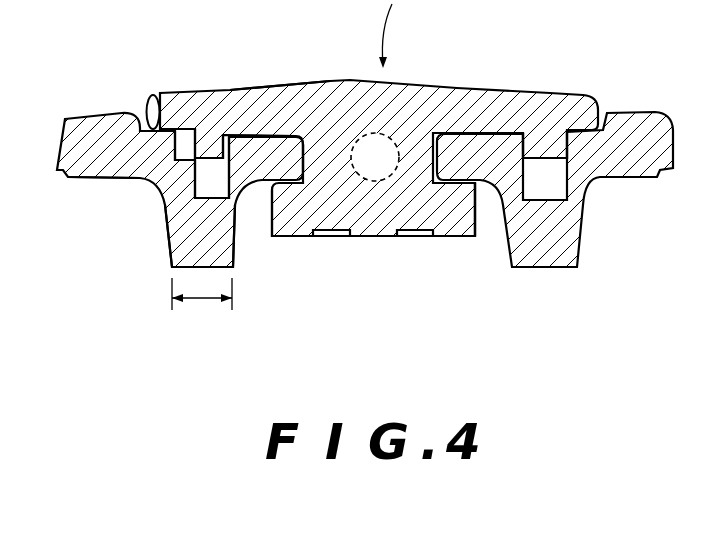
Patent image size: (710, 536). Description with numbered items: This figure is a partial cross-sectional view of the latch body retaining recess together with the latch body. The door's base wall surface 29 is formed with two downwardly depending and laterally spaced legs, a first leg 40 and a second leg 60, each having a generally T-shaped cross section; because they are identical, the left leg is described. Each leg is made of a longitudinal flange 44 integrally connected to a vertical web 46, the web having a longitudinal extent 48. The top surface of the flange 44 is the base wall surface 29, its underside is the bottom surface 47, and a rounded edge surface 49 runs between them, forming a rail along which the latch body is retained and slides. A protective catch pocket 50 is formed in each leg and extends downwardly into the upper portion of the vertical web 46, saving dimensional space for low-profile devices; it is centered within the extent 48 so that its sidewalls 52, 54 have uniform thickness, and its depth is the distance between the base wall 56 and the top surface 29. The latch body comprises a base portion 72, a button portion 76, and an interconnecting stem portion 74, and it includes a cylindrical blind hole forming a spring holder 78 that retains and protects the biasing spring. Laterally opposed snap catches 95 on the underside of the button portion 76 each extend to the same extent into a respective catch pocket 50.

The first leg 40 is at (63, 106).
The second leg 60 is at (669, 104).
The button portion 76 is at (423, 98).
The base portion 72 is at (369, 222).
The spring holder 78 is at (342, 182).
The stem portion 74 is at (413, 168).
The snap catch 95 is at (547, 143).
The base wall 56 is at (205, 176).
The rounded edge surface 49 is at (304, 134).
The protective catch pocket 50 is at (235, 168).
The longitudinal flange 44 is at (277, 140).
The sidewall 52 is at (223, 172).
The sidewall 54 is at (187, 193).
The vertical web 46 is at (168, 252).
The bottom surface 47 is at (123, 190).
The longitudinal extent 48 is at (203, 303).
The base wall surface 29 is at (160, 110).